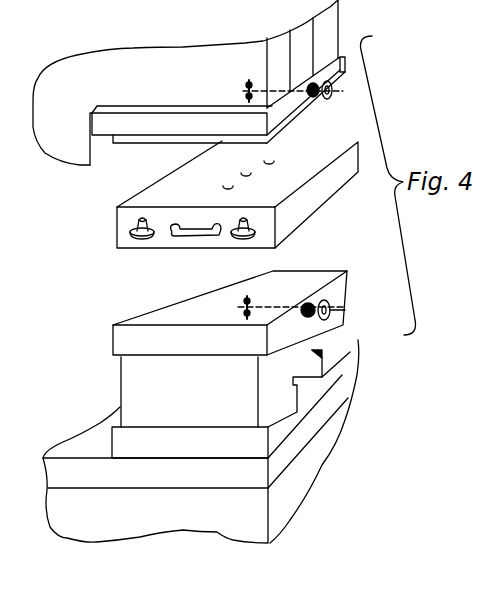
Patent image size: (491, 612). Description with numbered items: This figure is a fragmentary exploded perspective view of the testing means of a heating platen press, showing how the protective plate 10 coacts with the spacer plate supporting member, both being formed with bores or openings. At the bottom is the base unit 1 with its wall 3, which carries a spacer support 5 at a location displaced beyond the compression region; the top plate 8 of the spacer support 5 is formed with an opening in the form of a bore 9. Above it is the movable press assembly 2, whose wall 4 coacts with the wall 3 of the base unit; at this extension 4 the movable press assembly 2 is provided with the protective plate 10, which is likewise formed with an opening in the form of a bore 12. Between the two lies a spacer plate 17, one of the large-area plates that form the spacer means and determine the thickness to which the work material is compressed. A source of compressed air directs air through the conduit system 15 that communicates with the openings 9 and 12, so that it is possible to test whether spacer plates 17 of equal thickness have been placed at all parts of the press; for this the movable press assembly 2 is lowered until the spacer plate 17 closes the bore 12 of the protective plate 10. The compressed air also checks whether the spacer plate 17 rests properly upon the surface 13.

The base 1 is at (87, 512).
The movable press assembly 2 is at (73, 147).
The wall of the base unit 3 is at (195, 448).
The wall of the movable press assembly 4 is at (182, 103).
The spacer support 5 is at (320, 337).
The top plate 8 is at (338, 292).
The bore 9 is at (246, 298).
The protective plate 10 is at (293, 115).
The bore 12 is at (250, 105).
The surface 13 is at (173, 315).
The element 15 is at (490, 535).
The spacer plate 17 is at (317, 200).